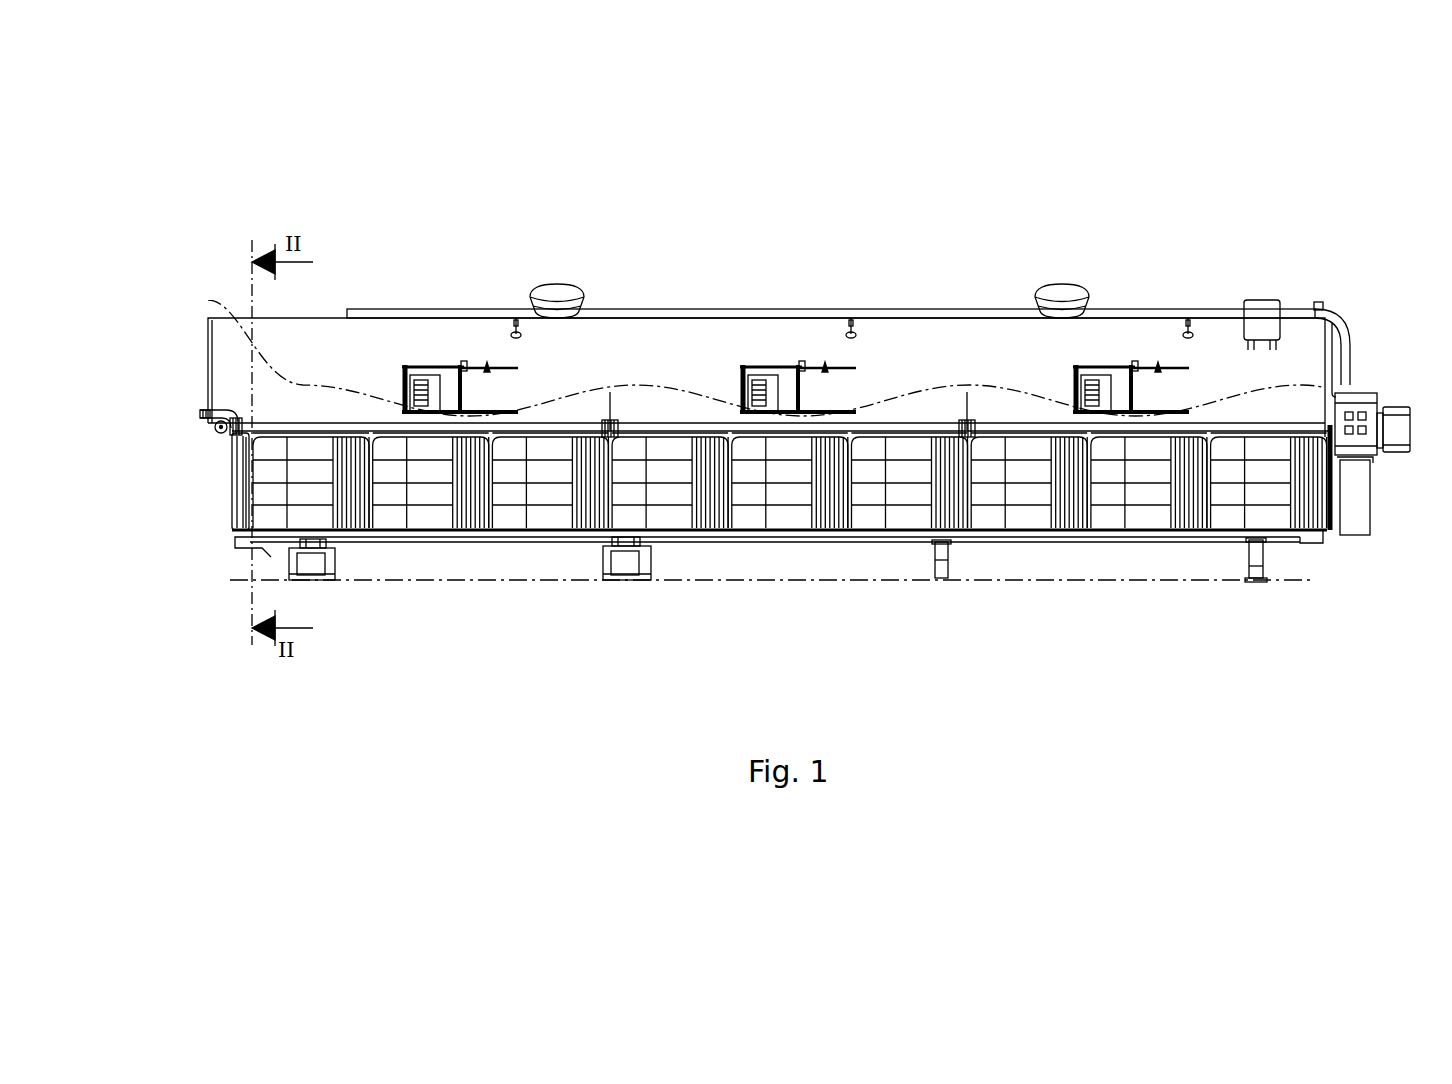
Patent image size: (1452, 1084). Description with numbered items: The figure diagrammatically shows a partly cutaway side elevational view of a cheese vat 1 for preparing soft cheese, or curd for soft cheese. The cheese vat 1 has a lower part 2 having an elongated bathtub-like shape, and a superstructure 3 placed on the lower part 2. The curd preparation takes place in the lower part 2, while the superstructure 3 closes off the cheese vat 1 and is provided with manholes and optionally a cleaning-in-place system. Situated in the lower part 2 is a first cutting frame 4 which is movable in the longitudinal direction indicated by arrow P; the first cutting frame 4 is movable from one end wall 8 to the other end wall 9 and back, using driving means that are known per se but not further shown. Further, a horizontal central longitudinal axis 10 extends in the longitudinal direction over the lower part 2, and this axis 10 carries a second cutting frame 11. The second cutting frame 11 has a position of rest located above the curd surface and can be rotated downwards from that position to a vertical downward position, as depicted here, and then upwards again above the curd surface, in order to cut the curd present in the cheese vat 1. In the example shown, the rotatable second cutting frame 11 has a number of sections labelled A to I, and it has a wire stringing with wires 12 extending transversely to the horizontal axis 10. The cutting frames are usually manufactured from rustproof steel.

The cheese vat 1 is at (186, 431).
The lower part 2 is at (266, 557).
The superstructure 3 is at (298, 365).
The first cutting frame 4 is at (245, 515).
The end wall 8 is at (232, 460).
The end wall 9 is at (1338, 492).
The horizontal central longitudinal axis 10 is at (900, 428).
The second cutting frame 11 is at (1228, 645).
The wires 12 is at (1291, 513).
The arrow P is at (282, 492).